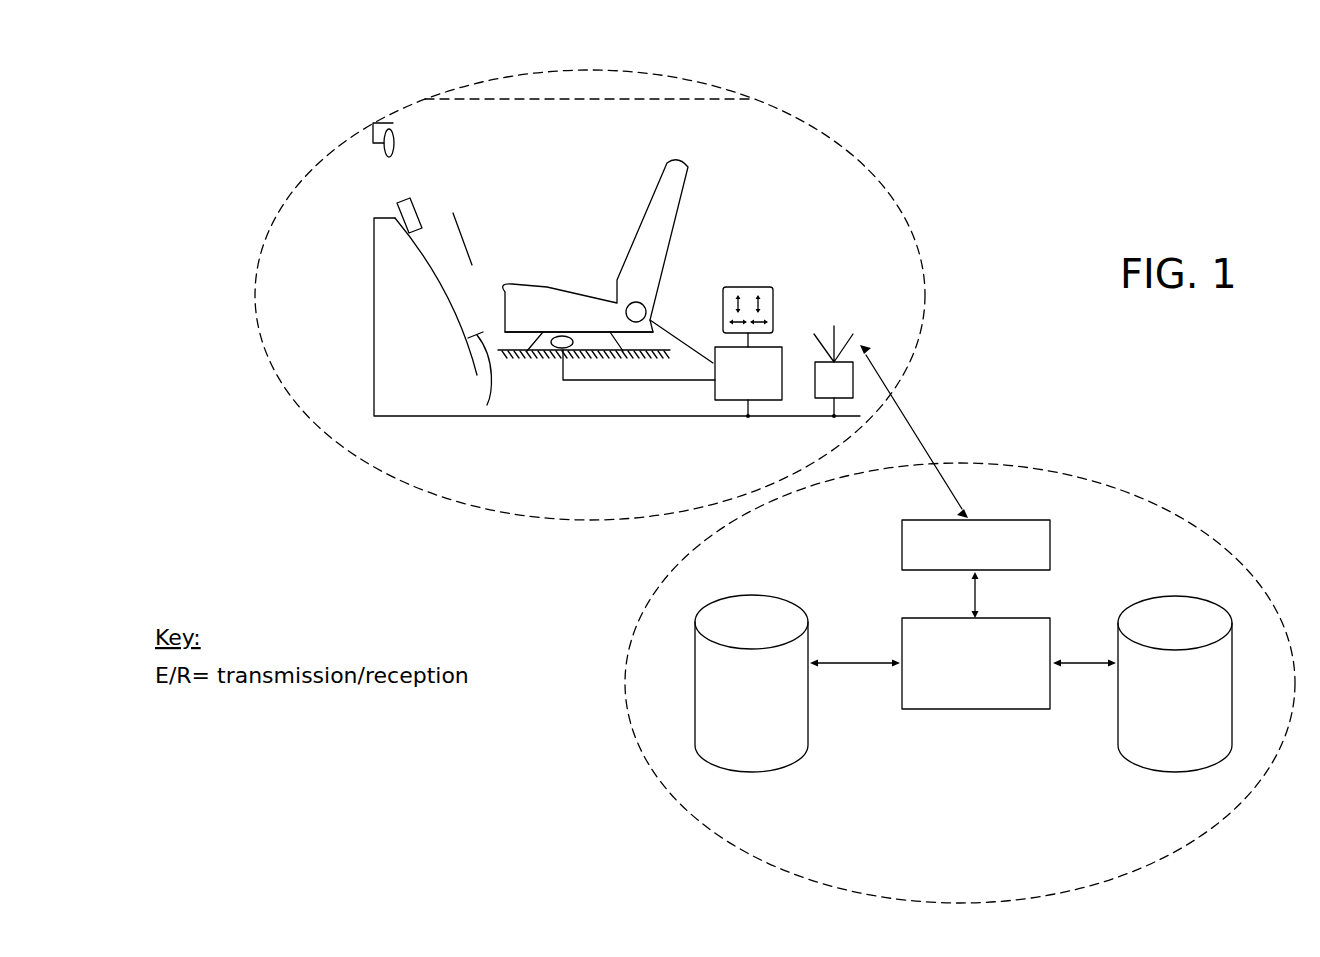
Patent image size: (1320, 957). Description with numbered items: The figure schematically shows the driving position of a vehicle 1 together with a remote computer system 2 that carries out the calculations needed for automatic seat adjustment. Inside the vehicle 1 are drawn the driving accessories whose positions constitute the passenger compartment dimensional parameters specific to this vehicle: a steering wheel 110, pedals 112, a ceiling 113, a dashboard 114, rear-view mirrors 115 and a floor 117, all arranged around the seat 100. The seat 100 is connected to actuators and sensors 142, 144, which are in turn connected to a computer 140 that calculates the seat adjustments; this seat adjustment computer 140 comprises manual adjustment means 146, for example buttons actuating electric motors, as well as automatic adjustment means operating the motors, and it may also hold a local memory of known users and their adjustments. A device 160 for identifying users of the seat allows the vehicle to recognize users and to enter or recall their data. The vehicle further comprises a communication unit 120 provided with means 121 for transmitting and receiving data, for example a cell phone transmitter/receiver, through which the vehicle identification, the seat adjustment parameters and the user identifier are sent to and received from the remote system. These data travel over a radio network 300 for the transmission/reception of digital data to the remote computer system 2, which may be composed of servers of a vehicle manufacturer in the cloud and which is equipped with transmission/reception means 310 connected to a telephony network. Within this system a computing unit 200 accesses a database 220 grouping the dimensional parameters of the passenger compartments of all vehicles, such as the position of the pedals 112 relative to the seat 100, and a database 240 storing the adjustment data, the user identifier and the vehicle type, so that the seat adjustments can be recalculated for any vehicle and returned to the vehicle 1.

The vehicle 1 is at (803, 120).
The remote computer system 2 is at (1257, 582).
The seat 100 is at (674, 193).
The steering wheel 110 is at (422, 253).
The pedals 112 is at (487, 405).
The ceiling 113 is at (577, 98).
The dashboard 114 is at (440, 292).
The rear-view mirrors 115 is at (385, 124).
The floor 117 is at (520, 352).
The communication unit 120 is at (856, 386).
The means for transmitting and receiving data 121 is at (850, 342).
The computer 140 is at (742, 381).
The actuators and sensors 142 is at (633, 302).
The actuators and sensors 144 is at (562, 336).
The manual adjustment means 146 is at (755, 287).
The device for identifying users 160 is at (413, 203).
The computing unit 200 is at (966, 711).
The database 220 is at (1130, 768).
The database 240 is at (808, 727).
The radio network 300 is at (942, 452).
The transmission/reception means 310 is at (1052, 550).